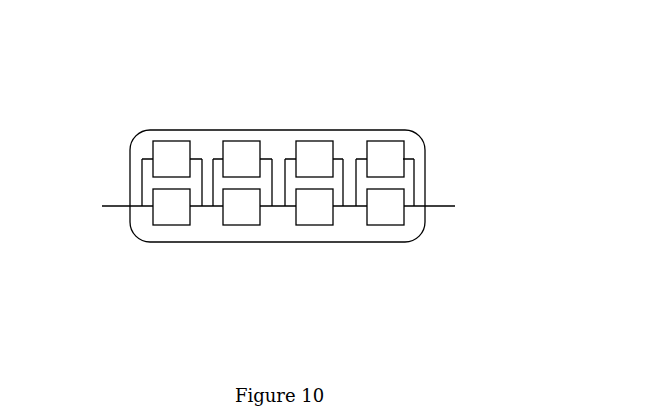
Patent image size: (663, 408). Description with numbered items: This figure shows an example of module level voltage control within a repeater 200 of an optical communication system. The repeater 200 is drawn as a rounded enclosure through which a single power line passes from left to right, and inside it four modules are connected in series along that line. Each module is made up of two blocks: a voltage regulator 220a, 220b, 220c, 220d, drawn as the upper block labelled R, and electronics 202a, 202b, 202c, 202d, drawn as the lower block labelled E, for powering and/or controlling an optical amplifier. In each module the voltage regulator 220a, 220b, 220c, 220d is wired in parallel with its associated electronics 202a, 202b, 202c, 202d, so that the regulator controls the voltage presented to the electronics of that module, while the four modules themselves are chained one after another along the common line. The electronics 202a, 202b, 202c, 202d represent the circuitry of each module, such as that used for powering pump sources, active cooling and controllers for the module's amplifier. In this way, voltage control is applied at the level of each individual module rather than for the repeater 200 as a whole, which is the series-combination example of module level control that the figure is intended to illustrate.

The repeater 200 is at (458, 64).
The voltage regulator 220a is at (172, 140).
The voltage regulator 220b is at (246, 141).
The voltage regulator 220c is at (312, 140).
The voltage regulator 220d is at (382, 140).
The electronics 202a is at (175, 225).
The electronics 202b is at (242, 225).
The electronics 202c is at (315, 225).
The electronics 202d is at (387, 225).